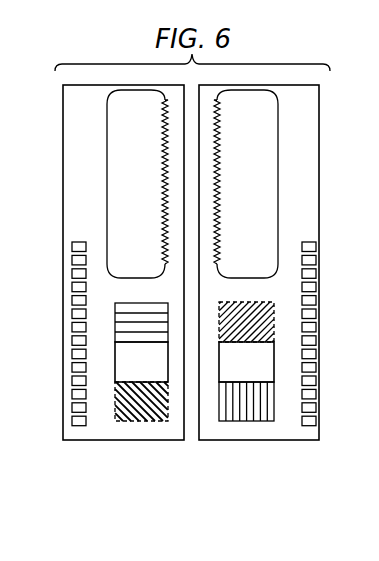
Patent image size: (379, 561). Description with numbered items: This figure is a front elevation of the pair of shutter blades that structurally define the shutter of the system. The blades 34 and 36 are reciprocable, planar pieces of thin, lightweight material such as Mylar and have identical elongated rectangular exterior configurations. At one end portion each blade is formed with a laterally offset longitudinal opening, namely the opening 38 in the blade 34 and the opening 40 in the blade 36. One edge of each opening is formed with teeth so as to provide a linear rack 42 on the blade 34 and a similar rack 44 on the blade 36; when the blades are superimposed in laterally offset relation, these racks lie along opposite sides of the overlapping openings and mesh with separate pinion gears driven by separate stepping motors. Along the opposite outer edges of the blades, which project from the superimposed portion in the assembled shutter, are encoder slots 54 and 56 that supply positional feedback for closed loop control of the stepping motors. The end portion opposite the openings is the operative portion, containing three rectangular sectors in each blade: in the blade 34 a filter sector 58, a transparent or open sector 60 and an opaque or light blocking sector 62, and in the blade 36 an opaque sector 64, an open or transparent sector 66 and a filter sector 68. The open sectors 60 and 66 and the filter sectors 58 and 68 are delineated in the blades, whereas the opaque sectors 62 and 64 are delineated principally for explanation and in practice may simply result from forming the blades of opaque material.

The blade 34 is at (100, 430).
The blade 36 is at (288, 430).
The longitudinal opening 38 is at (107, 160).
The longitudinal opening 40 is at (278, 160).
The linear rack 42 is at (161, 221).
The rack 44 is at (222, 173).
The encoder slots 54 is at (72, 355).
The encoder slots 56 is at (316, 355).
The filter sector 58 is at (149, 310).
The transparent or open sector 60 is at (133, 370).
The opaque or light blocking sector 62 is at (146, 405).
The opaque sector 64 is at (252, 302).
The open or transparent sector 66 is at (238, 370).
The filter sector 68 is at (242, 405).